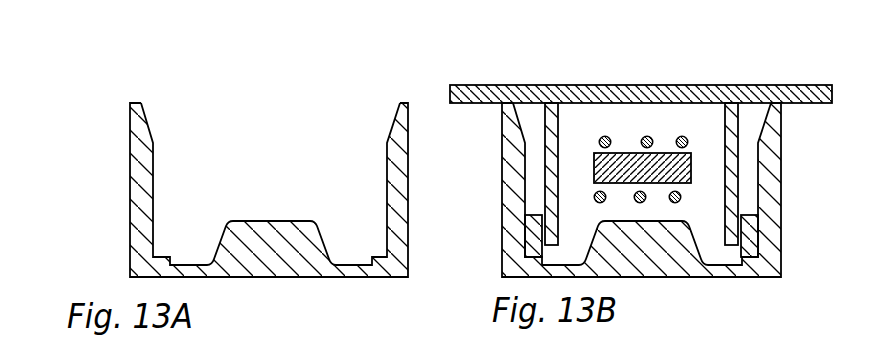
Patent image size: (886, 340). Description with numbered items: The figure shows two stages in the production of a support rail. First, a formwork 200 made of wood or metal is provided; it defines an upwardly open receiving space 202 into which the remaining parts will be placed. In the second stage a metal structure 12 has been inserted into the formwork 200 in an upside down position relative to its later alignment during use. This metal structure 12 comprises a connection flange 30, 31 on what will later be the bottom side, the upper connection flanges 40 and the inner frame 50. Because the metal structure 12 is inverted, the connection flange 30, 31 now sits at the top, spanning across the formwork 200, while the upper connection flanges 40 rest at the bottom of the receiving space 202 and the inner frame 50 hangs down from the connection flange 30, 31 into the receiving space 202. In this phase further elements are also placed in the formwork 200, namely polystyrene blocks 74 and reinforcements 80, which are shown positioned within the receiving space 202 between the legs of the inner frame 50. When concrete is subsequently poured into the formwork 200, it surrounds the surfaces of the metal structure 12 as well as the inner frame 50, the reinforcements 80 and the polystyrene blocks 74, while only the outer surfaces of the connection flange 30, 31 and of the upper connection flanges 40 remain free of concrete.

In FIG. 13B, the metal structure 12 is at (597, 144).
In FIG. 13B, the connection flange 30 is at (641, 57).
In FIG. 13B, the substrate 31 is at (618, 92).
In FIG. 13B, the upper connection flanges 40 is at (538, 238).
In FIG. 13B, the inner frame 50 is at (541, 137).
In FIG. 13B, the polystyrene blocks 74 is at (664, 168).
In FIG. 13B, the reinforcements 80 is at (647, 136).
In FIG. 13A, the formwork 200 is at (145, 153).
In FIG. 13B, the formwork 200 is at (513, 168).
In FIG. 13A, the receiving space 202 is at (192, 202).
In FIG. 13B, the receiving space 202 is at (530, 202).